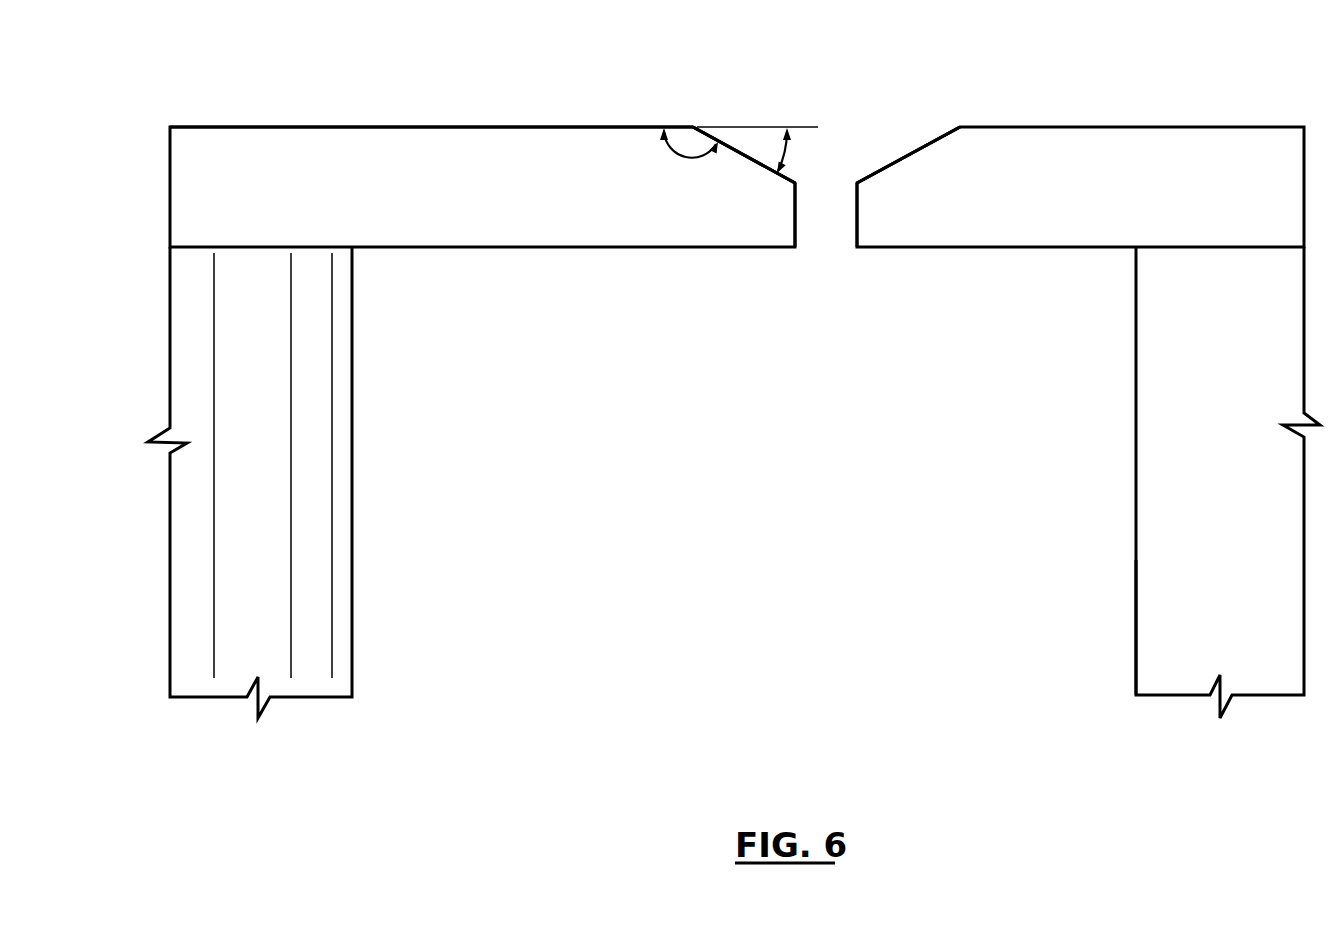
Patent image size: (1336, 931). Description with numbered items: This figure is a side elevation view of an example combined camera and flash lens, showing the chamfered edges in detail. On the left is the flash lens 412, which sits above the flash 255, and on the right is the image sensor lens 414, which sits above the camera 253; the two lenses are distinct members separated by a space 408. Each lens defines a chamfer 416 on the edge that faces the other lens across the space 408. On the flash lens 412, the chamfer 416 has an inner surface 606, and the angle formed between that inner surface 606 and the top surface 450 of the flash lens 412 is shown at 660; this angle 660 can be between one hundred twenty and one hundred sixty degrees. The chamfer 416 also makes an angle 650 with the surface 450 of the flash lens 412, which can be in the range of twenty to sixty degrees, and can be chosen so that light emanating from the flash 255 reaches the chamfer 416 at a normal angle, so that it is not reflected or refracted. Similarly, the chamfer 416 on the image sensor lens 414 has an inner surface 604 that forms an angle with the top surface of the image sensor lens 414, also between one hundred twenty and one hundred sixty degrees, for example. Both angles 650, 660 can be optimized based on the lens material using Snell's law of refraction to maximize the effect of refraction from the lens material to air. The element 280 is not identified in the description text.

The flash lens 412 is at (255, 180).
The image sensor lens 414 is at (1233, 175).
The top surface of the flash lens 450 is at (473, 118).
The chamfer 416 is at (762, 165).
The angle 660 is at (672, 151).
The angle 650 is at (787, 152).
The inner surface of the chamfer 606 is at (734, 153).
The inner surface of the chamfer 604 is at (900, 165).
The space 408 is at (828, 258).
The flash 255 is at (317, 645).
The second support column 280 is at (1172, 477).
The camera 253 is at (1165, 631).